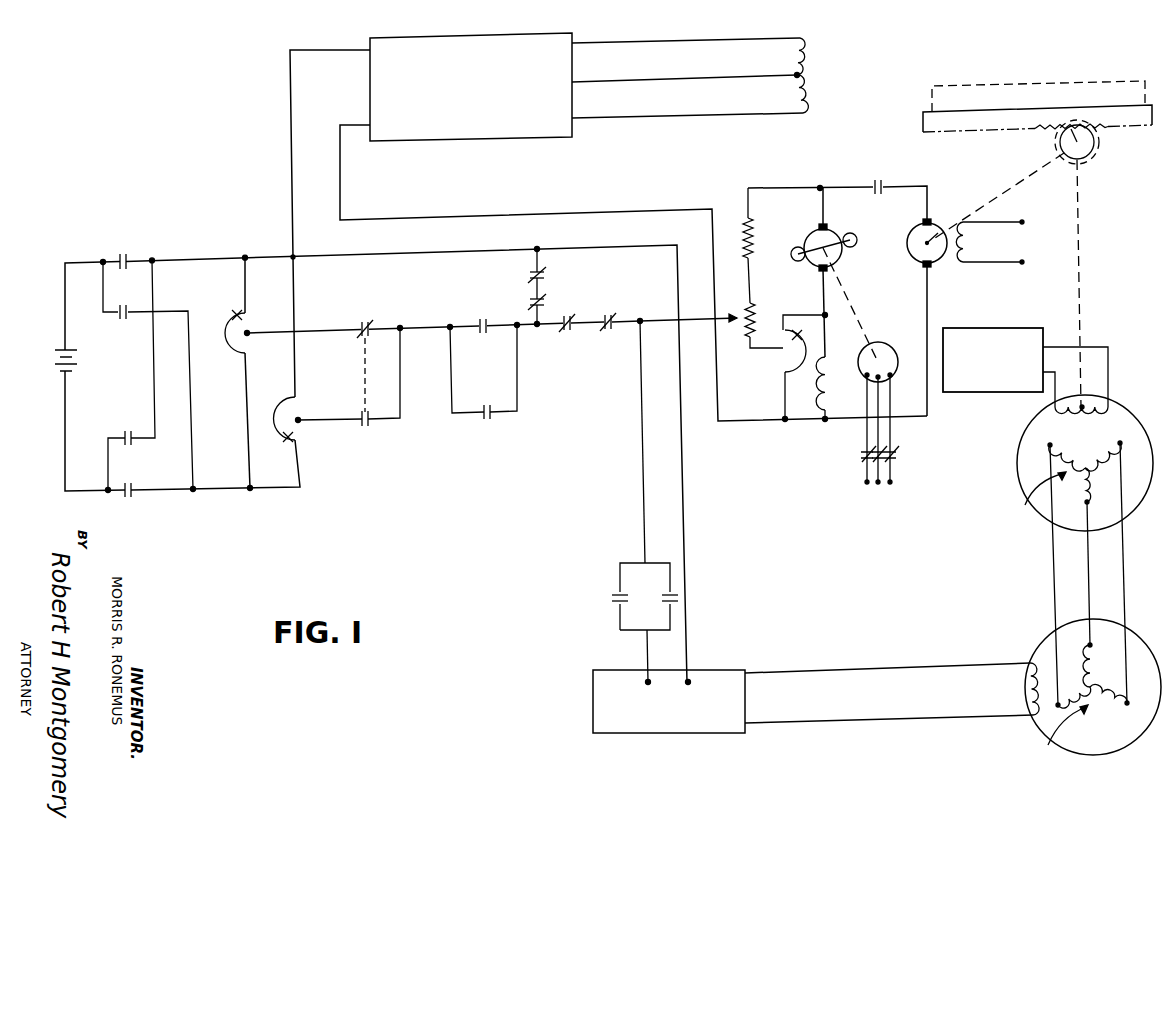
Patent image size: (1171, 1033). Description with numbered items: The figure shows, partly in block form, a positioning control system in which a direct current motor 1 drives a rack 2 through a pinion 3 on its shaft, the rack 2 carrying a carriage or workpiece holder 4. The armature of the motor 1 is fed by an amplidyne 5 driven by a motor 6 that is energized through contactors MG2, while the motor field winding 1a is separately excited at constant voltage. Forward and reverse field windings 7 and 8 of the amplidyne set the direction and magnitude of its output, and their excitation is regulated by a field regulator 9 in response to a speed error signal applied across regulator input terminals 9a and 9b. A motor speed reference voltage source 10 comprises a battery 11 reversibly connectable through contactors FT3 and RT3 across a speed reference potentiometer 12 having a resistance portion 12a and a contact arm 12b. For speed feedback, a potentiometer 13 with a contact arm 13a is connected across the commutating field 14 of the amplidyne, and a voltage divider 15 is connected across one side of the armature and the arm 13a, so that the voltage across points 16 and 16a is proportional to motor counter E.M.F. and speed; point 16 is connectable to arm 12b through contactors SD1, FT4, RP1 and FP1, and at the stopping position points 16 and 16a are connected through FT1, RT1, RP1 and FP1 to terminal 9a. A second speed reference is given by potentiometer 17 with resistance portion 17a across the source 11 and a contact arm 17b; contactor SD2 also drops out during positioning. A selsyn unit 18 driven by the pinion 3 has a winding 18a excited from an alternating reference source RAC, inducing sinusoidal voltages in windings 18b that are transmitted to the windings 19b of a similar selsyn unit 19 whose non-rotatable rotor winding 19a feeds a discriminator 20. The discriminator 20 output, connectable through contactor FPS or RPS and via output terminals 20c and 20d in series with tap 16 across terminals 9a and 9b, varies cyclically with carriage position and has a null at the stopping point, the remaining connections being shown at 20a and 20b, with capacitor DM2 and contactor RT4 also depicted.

The direct current motor 1 is at (917, 230).
The motor field winding 1a is at (970, 240).
The rack 2 is at (1123, 125).
The pinion 3 is at (1097, 152).
The carriage 4 is at (1088, 81).
The amplidyne 5 is at (838, 232).
The motor 6 is at (892, 347).
The forward field winding 7 is at (806, 50).
The reverse field winding 8 is at (808, 92).
The field regulator 9 is at (560, 33).
The regulator input terminal 9a is at (369, 47).
The regulator input terminal 9b is at (368, 122).
The motor speed reference voltage source 10 is at (124, 383).
The battery 11 is at (52, 354).
The speed reference potentiometer 12 is at (227, 350).
The resistance portion 12a is at (230, 314).
The contact arm 12b is at (250, 326).
The potentiometer 13 is at (800, 370).
The contact arm 13a is at (790, 345).
The commutating field 14 is at (830, 390).
The voltage divider 15 is at (780, 287).
The point 16 is at (745, 340).
The point 16a is at (785, 420).
The potentiometer 17 is at (286, 398).
The resistance portion 17a is at (280, 436).
The contact arm 17b is at (318, 432).
The selsyn unit 18 is at (1066, 463).
The rotor winding 18a is at (1088, 414).
The stator windings 18b is at (1017, 478).
The selsyn unit 19 is at (1080, 683).
The rotor winding 19a is at (1030, 660).
The windings 19b is at (1075, 704).
The discriminator 20 is at (813, 705).
The discriminator terminal 20a is at (749, 670).
The discriminator terminal 20b is at (749, 727).
The discriminator output terminal 20c is at (643, 678).
The discriminator output terminal 20d is at (692, 678).
The capacitor DM2 is at (880, 178).
The contactors MG2 is at (899, 448).
The reference source of alternating voltage RAC is at (990, 328).
The contactor FT1 is at (546, 272).
The contactor RT1 is at (546, 300).
The contactor RP1 is at (567, 334).
The contactor FP1 is at (614, 312).
The contactor FT3 is at (122, 251).
The contactor RT3 is at (118, 322).
The contactor FT4 is at (486, 316).
The capacitor RT4 is at (487, 422).
The contactor SD1 is at (366, 318).
The contactor SD2 is at (366, 428).
The forward position switch FPS is at (608, 598).
The contactor RPS is at (683, 598).